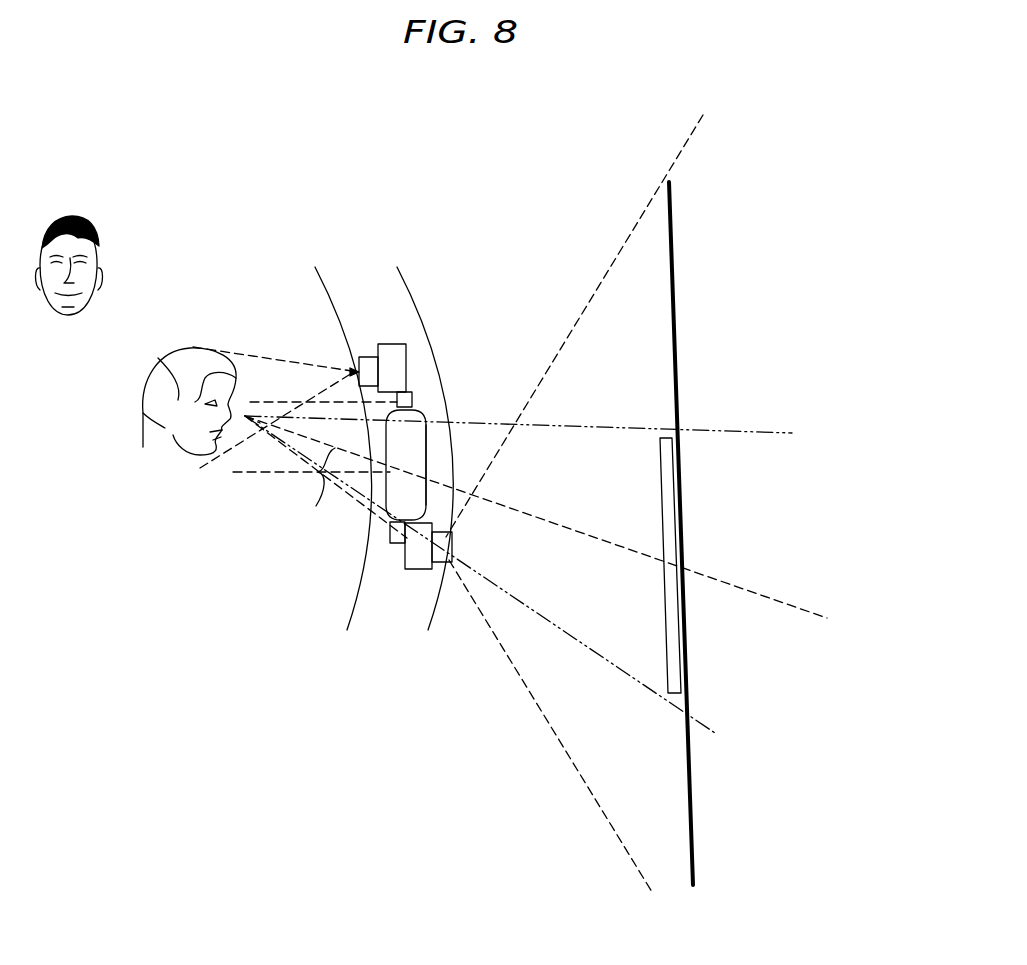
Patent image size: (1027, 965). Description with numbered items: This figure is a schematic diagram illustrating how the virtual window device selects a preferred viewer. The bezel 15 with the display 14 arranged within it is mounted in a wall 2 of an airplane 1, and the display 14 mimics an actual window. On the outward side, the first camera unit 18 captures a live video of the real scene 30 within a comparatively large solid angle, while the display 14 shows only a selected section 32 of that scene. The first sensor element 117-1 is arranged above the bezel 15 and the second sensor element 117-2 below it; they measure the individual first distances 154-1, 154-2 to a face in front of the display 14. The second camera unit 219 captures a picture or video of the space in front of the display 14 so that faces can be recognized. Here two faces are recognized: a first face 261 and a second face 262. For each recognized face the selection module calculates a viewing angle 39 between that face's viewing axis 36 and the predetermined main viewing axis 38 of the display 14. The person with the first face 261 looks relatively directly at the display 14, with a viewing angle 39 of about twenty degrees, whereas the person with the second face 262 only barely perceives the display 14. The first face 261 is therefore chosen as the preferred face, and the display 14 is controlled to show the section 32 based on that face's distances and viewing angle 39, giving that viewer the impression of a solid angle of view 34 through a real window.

The airplane 1 is at (397, 438).
The wall 2 is at (425, 290).
The display 14 is at (397, 447).
The bezel 15 is at (427, 447).
The first camera unit 18 is at (420, 569).
The real scene 30 is at (647, 208).
The section 32 is at (677, 487).
The solid angle of view 34 is at (733, 428).
The viewing axis 36 is at (753, 593).
The main viewing axis 38 is at (237, 473).
The viewing angle 39 is at (313, 487).
The first sensor element 117-1 is at (413, 398).
The second sensor element 117-2 is at (390, 532).
The individual first distance 154-1 is at (282, 402).
The individual first distance 154-2 is at (287, 450).
The second camera unit 219 is at (393, 344).
The first face 261 is at (173, 350).
The second face 262 is at (73, 220).